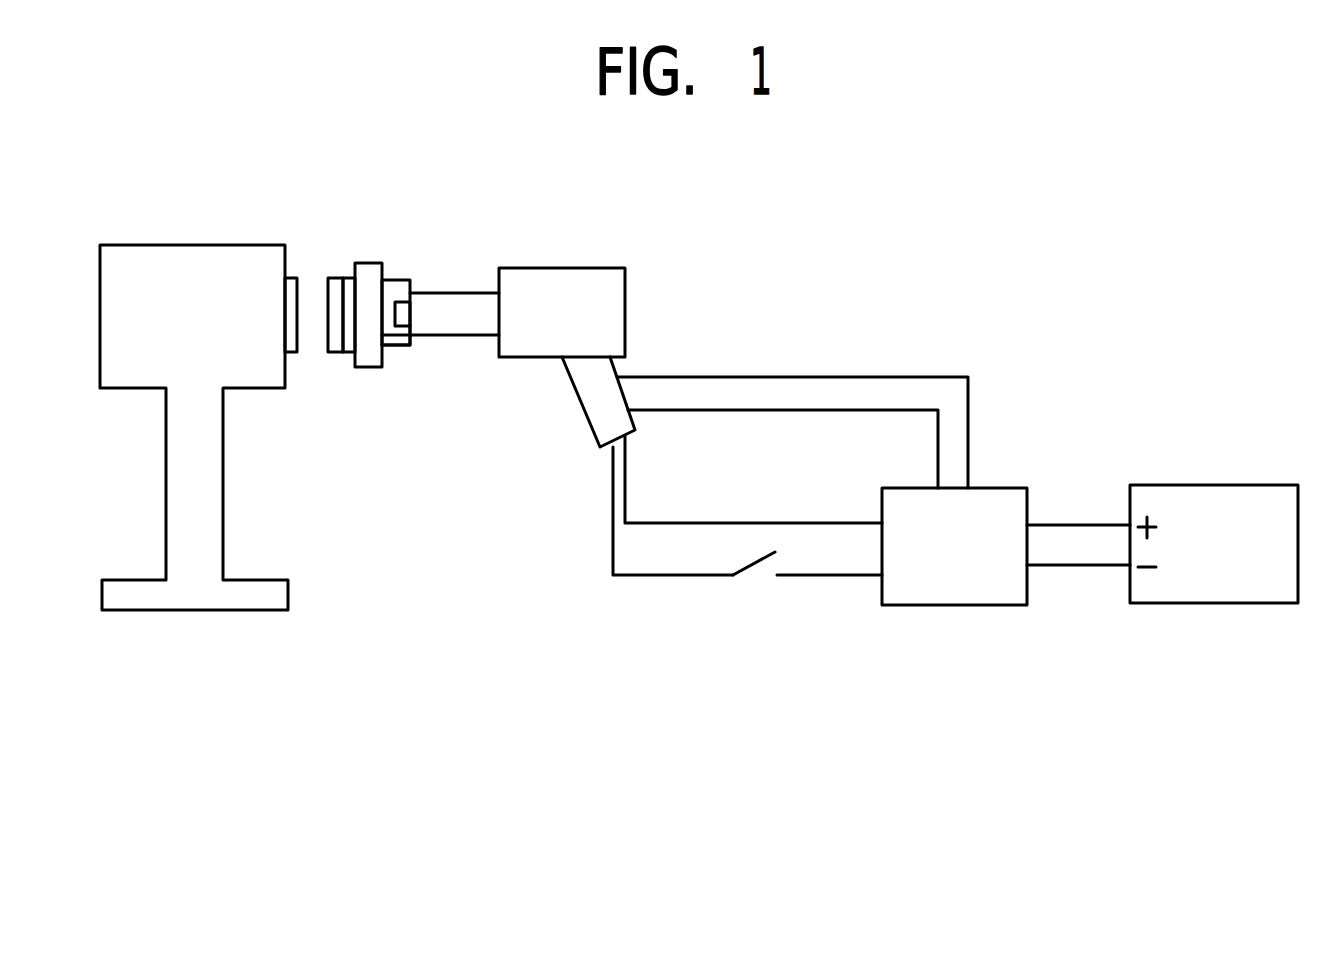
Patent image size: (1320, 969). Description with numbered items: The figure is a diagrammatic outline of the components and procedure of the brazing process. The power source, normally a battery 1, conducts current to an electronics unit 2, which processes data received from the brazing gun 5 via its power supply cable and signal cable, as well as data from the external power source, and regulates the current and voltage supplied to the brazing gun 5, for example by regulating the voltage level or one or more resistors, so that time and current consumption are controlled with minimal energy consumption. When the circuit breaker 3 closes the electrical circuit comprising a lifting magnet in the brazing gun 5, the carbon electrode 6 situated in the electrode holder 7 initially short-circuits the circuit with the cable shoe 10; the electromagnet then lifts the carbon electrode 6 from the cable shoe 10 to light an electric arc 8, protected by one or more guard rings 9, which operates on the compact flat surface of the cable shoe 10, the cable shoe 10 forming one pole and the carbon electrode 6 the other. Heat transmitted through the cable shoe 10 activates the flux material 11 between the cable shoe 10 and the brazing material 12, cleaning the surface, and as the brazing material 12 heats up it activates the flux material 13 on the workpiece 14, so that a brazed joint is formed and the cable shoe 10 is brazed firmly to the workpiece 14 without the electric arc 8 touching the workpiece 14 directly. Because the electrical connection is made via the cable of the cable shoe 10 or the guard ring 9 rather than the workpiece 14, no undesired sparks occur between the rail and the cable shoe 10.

The battery 1 is at (1223, 588).
The electronics unit 2 is at (963, 592).
The circuit breaker 3 is at (760, 575).
The brazing gun 5 is at (554, 281).
The carbon electrode 6 is at (403, 317).
The electrode holder 7 is at (478, 307).
The electric arc 8 is at (388, 343).
The guard ring 9 is at (398, 345).
The cable shoe 10 is at (363, 263).
The flux material 11 is at (345, 278).
The brazing material 12 is at (330, 278).
The flux material 13 is at (295, 343).
The workpiece 14 is at (170, 268).